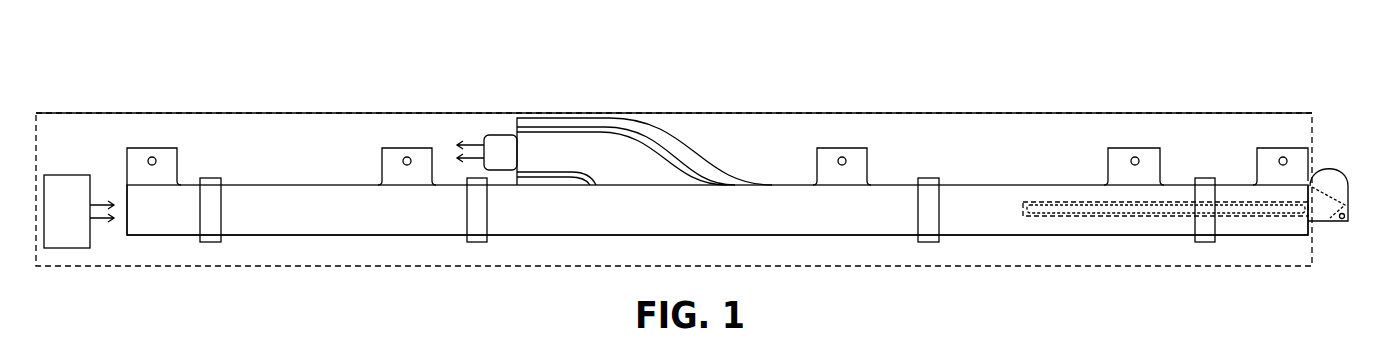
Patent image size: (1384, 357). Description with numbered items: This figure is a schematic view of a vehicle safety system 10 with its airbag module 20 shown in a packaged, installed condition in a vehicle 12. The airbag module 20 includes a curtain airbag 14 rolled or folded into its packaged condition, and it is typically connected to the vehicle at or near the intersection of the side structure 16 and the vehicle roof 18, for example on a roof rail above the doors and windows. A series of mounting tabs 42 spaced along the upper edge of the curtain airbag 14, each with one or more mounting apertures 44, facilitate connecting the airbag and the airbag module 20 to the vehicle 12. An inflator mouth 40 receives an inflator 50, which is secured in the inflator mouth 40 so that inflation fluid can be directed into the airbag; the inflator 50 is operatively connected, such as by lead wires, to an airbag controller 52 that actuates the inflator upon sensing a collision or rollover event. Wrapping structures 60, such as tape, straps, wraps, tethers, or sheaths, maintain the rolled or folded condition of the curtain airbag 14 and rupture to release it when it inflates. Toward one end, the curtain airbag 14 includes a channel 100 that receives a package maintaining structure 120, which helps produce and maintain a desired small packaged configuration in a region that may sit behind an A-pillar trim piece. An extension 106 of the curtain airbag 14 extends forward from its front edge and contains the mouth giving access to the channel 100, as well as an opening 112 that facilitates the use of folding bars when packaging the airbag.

The vehicle safety system 10 is at (134, 52).
The vehicle 12 is at (245, 113).
The curtain airbag 14 is at (325, 212).
The side structure 16 is at (360, 250).
The vehicle roof 18 is at (732, 113).
The airbag module 20 is at (206, 52).
The inflator mouth 40 is at (565, 148).
The mounting tabs 42 is at (138, 158).
The mounting apertures 44 is at (156, 158).
The inflator 50 is at (503, 150).
The airbag controller 52 is at (70, 226).
The wrapping structures 60 is at (210, 232).
The channel 100 is at (1055, 218).
The extension 106 is at (1329, 175).
The opening 112 is at (1342, 222).
The package maintaining structure 120 is at (1104, 212).